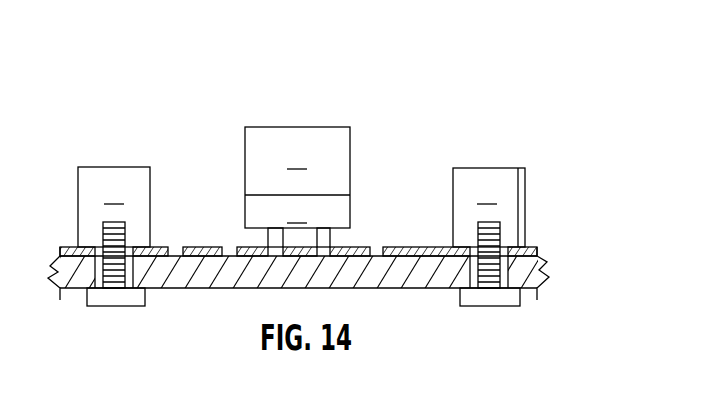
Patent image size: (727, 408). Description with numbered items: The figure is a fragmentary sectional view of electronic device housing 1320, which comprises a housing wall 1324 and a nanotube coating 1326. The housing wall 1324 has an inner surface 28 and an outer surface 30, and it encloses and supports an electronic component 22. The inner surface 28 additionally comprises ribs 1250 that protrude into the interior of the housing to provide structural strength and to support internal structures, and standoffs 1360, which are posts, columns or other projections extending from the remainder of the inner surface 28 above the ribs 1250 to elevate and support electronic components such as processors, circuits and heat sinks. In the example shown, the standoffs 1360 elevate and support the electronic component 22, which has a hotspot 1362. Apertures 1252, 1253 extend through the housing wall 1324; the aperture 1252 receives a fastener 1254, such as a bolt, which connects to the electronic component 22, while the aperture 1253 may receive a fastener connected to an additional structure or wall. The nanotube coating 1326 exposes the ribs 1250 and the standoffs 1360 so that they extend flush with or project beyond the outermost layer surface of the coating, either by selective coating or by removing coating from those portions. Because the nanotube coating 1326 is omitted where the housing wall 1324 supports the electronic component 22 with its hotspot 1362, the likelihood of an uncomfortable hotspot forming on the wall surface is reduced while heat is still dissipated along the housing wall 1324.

The electronic component 22 is at (245, 157).
The inner surface 28 is at (345, 258).
The outer surface 30 is at (205, 288).
The ribs 1250 is at (397, 257).
The aperture 1252 is at (96, 262).
The aperture 1253 is at (519, 168).
The fastener 1254 is at (124, 306).
The electronic device housing 1320 is at (437, 82).
The housing wall 1324 is at (546, 276).
The nanotube coating 1326 is at (537, 250).
The standoffs 1360 is at (330, 243).
The hotspot 1362 is at (245, 214).